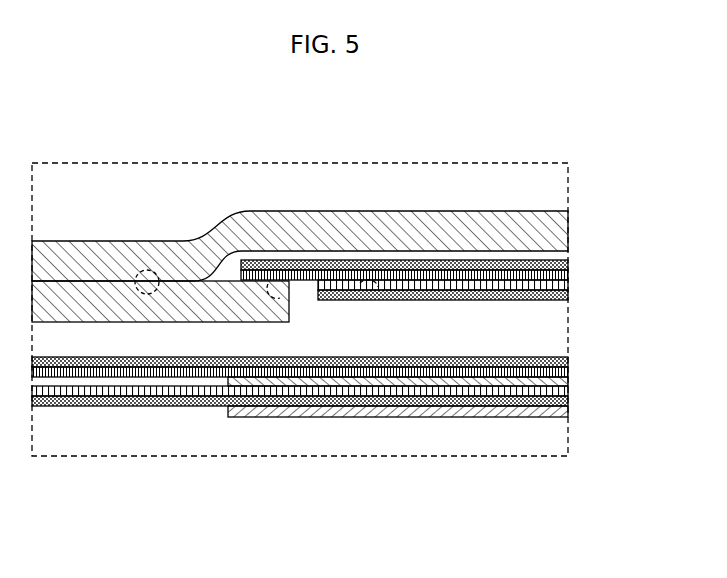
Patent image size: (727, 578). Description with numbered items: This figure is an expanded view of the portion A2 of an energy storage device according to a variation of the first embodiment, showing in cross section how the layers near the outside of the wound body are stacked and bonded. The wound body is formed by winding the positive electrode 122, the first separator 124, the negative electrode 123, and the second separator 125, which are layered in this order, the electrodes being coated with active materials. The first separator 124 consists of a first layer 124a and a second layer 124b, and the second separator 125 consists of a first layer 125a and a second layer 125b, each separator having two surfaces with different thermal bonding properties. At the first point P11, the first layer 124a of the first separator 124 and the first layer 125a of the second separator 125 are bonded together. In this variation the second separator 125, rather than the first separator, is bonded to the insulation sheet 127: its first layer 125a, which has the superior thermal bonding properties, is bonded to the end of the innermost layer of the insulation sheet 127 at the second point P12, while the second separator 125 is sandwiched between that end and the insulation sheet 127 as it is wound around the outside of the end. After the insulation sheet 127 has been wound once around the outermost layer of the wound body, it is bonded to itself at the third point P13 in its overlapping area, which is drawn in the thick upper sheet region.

The portion A2 is at (330, 163).
The insulation sheet 127 is at (292, 220).
The second separator 125 is at (358, 312).
The first layer of the second separator 125a is at (568, 273).
The second layer of the second separator 125b is at (568, 263).
The first separator 124 is at (358, 366).
The first layer of the first separator 124a is at (568, 285).
The second layer of the first separator 124b is at (568, 295).
The negative electrode 123 is at (565, 380).
The positive electrode 122 is at (565, 408).
The third point P13 is at (140, 262).
The second point P12 is at (293, 303).
The first point P11 is at (372, 302).